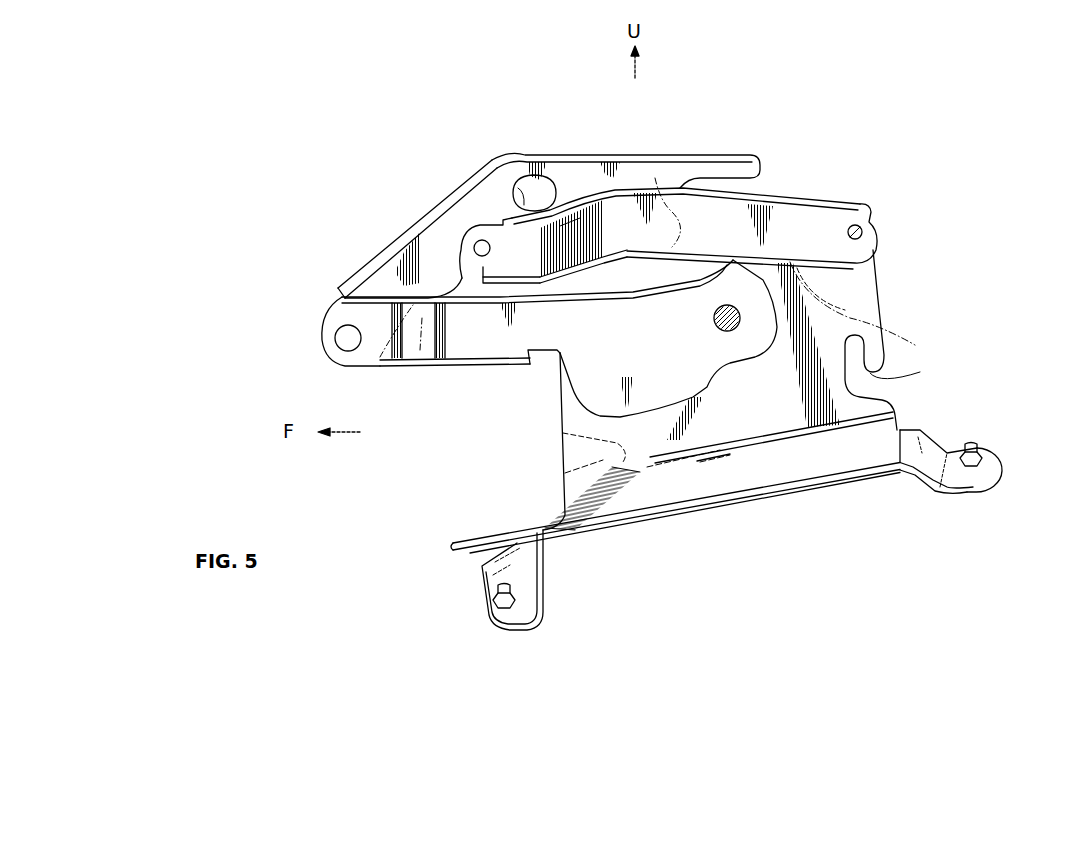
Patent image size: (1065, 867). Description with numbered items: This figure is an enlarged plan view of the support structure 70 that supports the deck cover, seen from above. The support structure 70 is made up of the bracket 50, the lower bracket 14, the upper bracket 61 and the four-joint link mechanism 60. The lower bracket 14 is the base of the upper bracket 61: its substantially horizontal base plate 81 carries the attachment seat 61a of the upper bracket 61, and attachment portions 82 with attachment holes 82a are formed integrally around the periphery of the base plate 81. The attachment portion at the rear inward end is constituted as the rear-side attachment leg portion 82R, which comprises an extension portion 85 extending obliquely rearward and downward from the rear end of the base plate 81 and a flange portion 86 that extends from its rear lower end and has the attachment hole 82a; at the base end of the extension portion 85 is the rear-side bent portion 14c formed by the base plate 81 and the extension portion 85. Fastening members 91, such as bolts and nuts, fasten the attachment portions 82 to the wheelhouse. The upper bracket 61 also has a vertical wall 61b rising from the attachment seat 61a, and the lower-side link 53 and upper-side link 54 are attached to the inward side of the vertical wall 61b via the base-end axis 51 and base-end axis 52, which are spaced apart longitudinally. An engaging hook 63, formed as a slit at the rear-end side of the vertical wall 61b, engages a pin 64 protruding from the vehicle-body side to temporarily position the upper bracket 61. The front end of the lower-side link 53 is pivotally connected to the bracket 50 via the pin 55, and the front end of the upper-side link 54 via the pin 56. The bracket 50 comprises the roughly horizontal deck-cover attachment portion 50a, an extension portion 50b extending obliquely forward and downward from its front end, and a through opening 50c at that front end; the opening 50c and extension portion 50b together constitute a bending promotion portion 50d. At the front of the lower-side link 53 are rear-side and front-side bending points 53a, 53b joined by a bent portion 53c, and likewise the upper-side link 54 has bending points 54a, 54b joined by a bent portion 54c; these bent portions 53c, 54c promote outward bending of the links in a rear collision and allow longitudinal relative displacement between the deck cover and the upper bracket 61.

The lower bracket 14 is at (755, 483).
The rear-side bent portion 14c is at (915, 430).
The bracket 50 is at (549, 194).
The deck-cover attachment portion 50a is at (600, 158).
The extension portion 50b is at (380, 275).
The through opening 50c is at (522, 187).
The bending promotion portion 50d is at (447, 133).
The base-end axis 51 is at (713, 318).
The base-end axis 52 is at (847, 232).
The lower-side link 53 is at (505, 351).
The rear-side bending point 53a is at (447, 328).
The front-side bending point 53b is at (383, 360).
The bent portion 53c is at (425, 350).
The upper-side link 54 is at (694, 235).
The rear-side bending point 54a is at (617, 263).
The front-side bending point 54b is at (534, 262).
The bent portion 54c is at (572, 258).
The pin 55 is at (333, 338).
The pin 56 is at (480, 244).
The four-joint link mechanism 60 is at (662, 190).
The upper bracket 61 is at (741, 390).
The attachment seat 61a is at (770, 492).
The vertical wall 61b is at (775, 412).
The engaging hook 63 is at (880, 368).
The pin 64 is at (900, 328).
The support structure 70 is at (918, 250).
The base plate 81 is at (625, 520).
The attachment portion 82 is at (517, 603).
The rear-side attachment leg portion 82R is at (984, 497).
The attachment hole 82a is at (957, 472).
The extension portion 85 is at (930, 490).
The flange portion 86 is at (990, 490).
The fastening member 91 is at (990, 474).